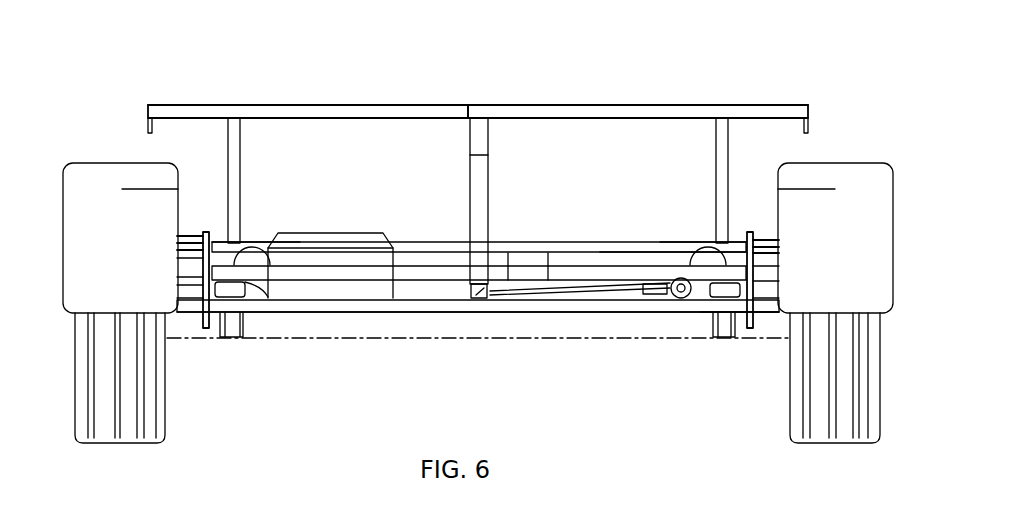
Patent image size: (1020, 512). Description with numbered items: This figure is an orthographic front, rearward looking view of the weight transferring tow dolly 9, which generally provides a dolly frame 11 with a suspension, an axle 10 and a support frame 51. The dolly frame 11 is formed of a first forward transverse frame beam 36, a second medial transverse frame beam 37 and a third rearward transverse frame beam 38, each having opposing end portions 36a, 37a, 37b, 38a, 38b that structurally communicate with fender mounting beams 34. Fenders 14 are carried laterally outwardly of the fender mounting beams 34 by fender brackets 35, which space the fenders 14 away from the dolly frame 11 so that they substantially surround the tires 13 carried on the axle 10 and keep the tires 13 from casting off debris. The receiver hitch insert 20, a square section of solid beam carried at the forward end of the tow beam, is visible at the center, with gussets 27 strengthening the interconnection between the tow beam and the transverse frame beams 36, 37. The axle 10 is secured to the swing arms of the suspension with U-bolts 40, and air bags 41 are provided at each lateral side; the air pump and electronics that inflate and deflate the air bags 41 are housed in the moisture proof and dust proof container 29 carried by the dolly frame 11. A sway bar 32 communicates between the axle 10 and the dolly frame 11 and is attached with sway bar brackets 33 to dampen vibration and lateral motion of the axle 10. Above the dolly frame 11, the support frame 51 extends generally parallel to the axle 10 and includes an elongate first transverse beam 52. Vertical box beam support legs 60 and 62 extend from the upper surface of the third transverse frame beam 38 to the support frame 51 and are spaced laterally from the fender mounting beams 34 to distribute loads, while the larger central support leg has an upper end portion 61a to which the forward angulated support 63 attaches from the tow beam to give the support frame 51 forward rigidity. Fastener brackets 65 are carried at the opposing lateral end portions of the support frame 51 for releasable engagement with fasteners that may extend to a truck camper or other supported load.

The weight transferring tow dolly 9 is at (422, 104).
The axle 10 is at (583, 346).
The dolly frame 11 is at (652, 244).
The tires 13 is at (158, 415).
The fenders 14 is at (105, 178).
The receiver hitch insert 20 is at (476, 300).
The gussets 27 is at (490, 300).
The container 29 is at (346, 287).
The sway bar 32 is at (600, 296).
The sway bar brackets 33 is at (680, 300).
The fender mounting beams 34 is at (206, 240).
The fender brackets 35 is at (183, 240).
The first forward transverse frame beam 36 is at (340, 306).
The end portion of first forward transverse frame beam 36a is at (748, 330).
The second medial transverse frame beam 37 is at (420, 272).
The end portion of second medial transverse frame beam 37a is at (758, 286).
The end portion of second medial transverse frame beam 37b is at (212, 293).
The third rearward transverse frame beam 38 is at (580, 252).
The end portion of third rearward transverse frame beam 38a is at (742, 248).
The end portion of third rearward transverse frame beam 38b is at (222, 246).
The U-bolts 40 is at (241, 338).
The air bags 41 is at (240, 292).
The support frame 51 is at (770, 104).
The first transverse beam 52 is at (295, 105).
The support leg 60 is at (716, 142).
The upper end portion of support leg 61a is at (478, 136).
The support leg 62 is at (240, 140).
The forward angulated support 63 is at (488, 188).
The fastener brackets 65 is at (148, 128).